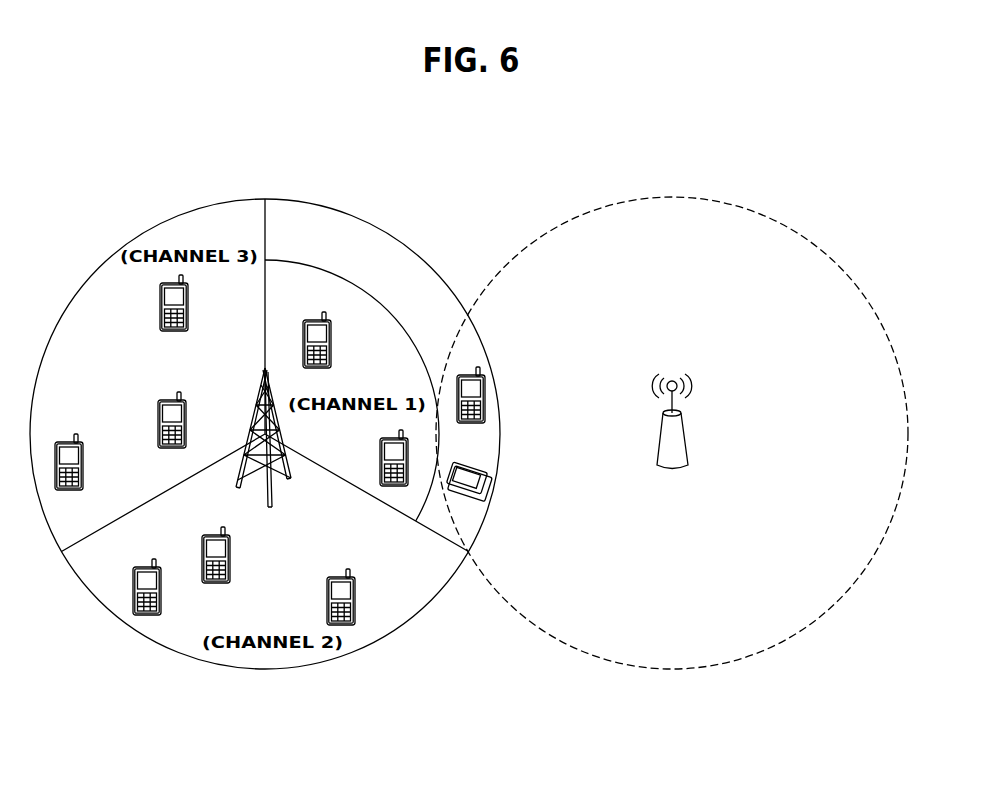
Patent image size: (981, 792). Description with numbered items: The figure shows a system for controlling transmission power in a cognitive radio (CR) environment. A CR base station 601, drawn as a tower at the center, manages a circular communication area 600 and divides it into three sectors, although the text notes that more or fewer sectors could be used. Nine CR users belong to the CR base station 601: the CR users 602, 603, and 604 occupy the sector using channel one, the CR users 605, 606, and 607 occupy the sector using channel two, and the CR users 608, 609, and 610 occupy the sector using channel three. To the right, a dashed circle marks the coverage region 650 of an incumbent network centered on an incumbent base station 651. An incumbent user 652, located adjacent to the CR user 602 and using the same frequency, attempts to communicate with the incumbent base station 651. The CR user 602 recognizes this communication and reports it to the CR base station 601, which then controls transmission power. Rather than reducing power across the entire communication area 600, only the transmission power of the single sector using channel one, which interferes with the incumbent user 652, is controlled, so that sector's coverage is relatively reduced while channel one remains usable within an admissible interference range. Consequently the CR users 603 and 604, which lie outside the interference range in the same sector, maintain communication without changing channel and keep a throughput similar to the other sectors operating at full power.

The communication area 600 is at (103, 264).
The CR base station 601 is at (272, 490).
The CR user 602 is at (472, 373).
The CR user 603 is at (380, 462).
The CR user 604 is at (332, 346).
The CR user 605 is at (355, 598).
The CR user 606 is at (163, 595).
The CR user 607 is at (232, 556).
The CR user 608 is at (78, 441).
The CR user 609 is at (172, 397).
The CR user 610 is at (160, 305).
The second wireless network coverage area 650 is at (797, 233).
The incumbent base station 651 is at (688, 438).
The incumbent user 652 is at (487, 468).